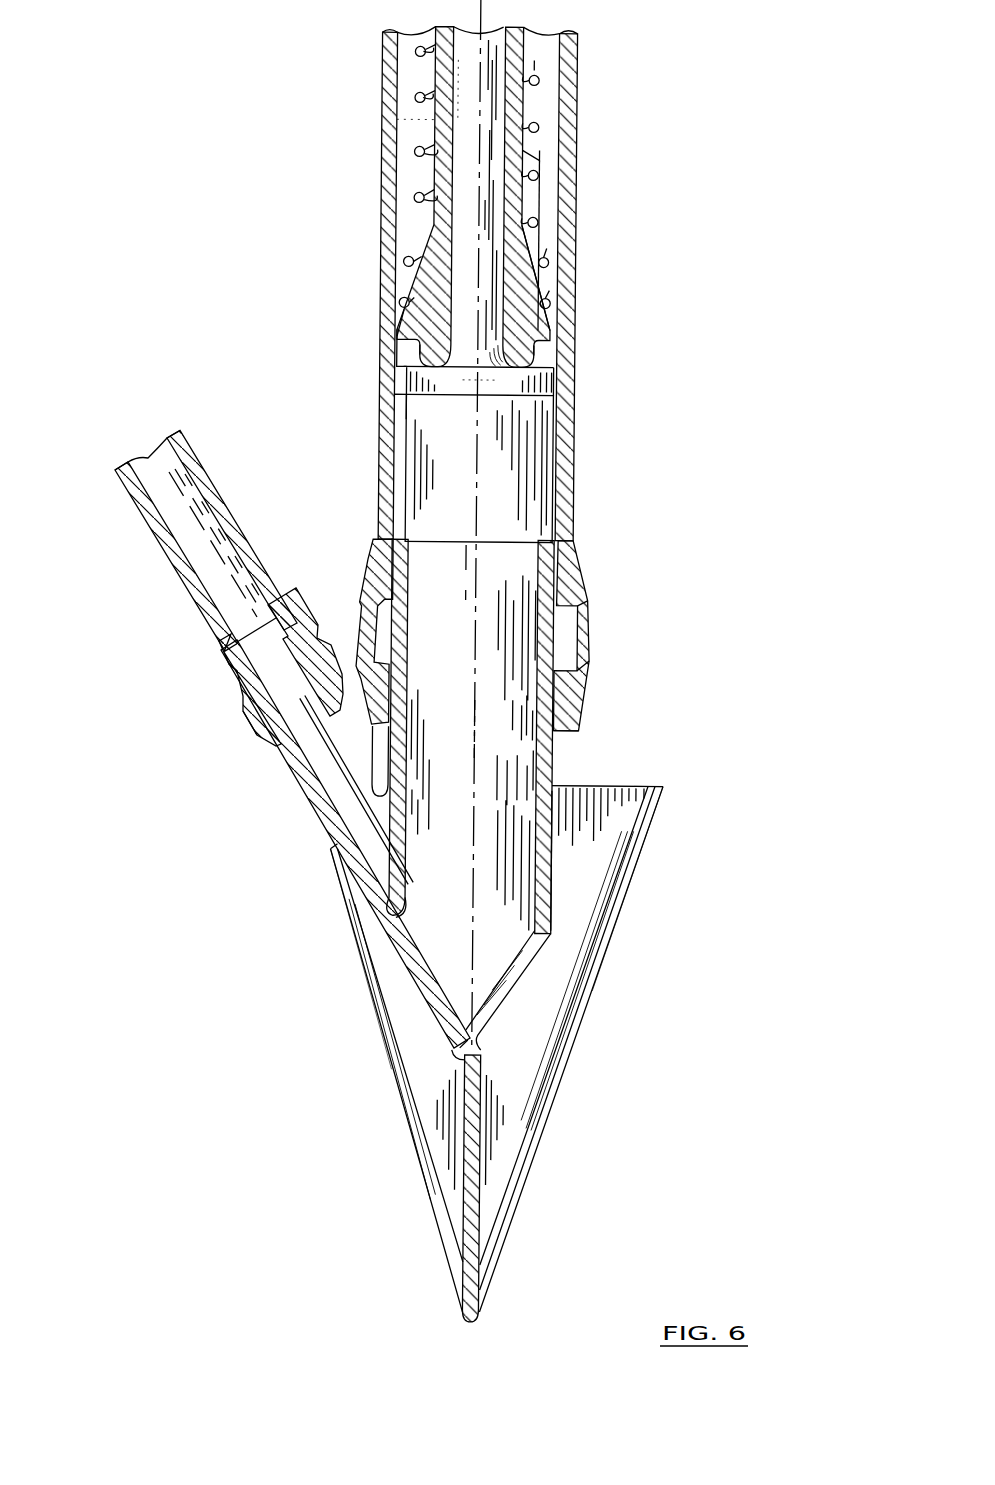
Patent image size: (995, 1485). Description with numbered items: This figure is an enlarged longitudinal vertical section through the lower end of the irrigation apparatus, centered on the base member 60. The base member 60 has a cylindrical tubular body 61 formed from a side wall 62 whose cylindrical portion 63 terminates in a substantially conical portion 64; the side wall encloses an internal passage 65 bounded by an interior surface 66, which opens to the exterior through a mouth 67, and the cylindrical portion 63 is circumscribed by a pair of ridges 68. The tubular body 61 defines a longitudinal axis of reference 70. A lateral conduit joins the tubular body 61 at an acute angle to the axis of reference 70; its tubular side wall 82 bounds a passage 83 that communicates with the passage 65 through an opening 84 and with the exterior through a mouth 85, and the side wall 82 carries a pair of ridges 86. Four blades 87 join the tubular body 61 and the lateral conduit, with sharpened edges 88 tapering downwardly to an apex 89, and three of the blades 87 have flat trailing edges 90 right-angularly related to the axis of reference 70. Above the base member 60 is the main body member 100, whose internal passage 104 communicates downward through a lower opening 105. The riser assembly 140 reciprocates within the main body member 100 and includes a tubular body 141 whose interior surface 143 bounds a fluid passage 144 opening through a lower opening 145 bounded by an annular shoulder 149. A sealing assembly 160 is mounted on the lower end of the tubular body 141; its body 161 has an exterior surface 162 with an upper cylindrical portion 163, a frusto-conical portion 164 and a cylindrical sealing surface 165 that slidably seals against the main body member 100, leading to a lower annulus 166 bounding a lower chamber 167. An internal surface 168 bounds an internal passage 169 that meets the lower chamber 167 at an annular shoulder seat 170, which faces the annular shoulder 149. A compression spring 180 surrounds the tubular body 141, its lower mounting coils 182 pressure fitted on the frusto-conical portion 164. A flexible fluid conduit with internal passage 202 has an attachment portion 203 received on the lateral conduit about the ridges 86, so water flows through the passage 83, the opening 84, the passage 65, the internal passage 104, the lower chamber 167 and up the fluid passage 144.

The base member 60 is at (645, 757).
The tubular body 61 is at (553, 772).
The side wall 62 is at (548, 825).
The cylindrical portion 63 is at (583, 688).
The conical portion 64 is at (515, 980).
The internal chamber or passage 65 is at (506, 600).
The interior surface 66 is at (400, 655).
The mouth or opening 67 is at (532, 530).
The ribs or ridges 68 is at (585, 602).
The axis of reference 70 is at (478, 757).
The tubular side wall 82 is at (292, 752).
The passage 83 is at (322, 772).
The opening 84 is at (404, 905).
The mouth 85 is at (250, 636).
The ribs or ridges 86 is at (250, 720).
The blades 87 is at (400, 1010).
The sharpened edges 88 is at (365, 976).
The apex 89 is at (466, 1322).
The trailing edges 90 is at (630, 783).
The main body member 100 is at (577, 240).
The internal passage 104 is at (535, 433).
The lower opening 105 is at (566, 710).
The riser assembly 140 is at (412, 122).
The tubular body 141 is at (530, 100).
The interior surface 143 is at (440, 80).
The fluid passage 144 is at (463, 115).
The lower opening 145 is at (470, 395).
The annular shoulder 149 is at (540, 340).
The sealing assembly 160 is at (405, 237).
The body 161 is at (548, 222).
The exterior surface 162 is at (538, 185).
The upper cylindrical portion 163 is at (545, 147).
The frusto-conical portion 164 is at (550, 268).
The sealing surface 165 is at (556, 373).
The lower annulus 166 is at (398, 420).
The lower chamber 167 is at (413, 378).
The internal surface 168 is at (425, 290).
The internal passage 169 is at (428, 320).
The annular shoulder seat 170 is at (416, 360).
The compression spring 180 is at (545, 82).
The lower mounting coils 182 is at (550, 301).
The internal passage 202 is at (182, 507).
The attachment portion 203 is at (232, 690).